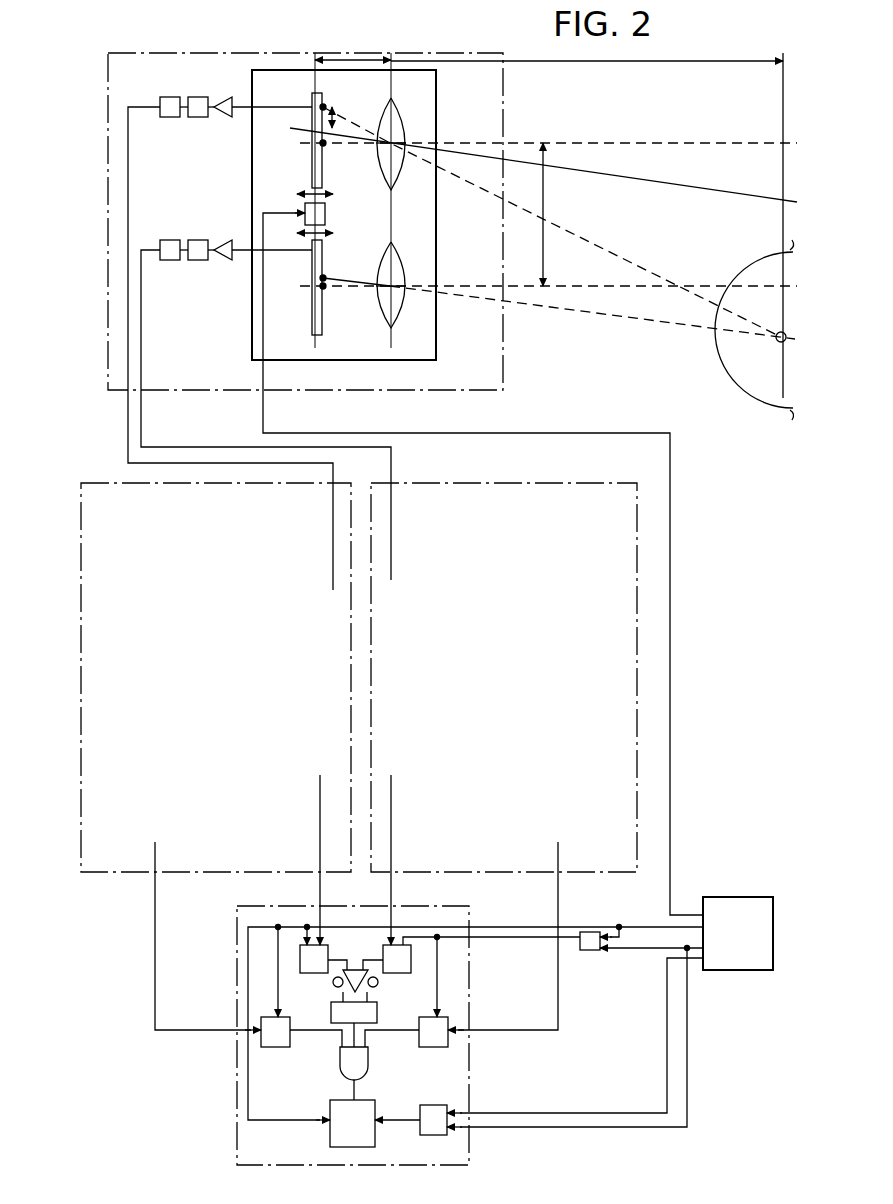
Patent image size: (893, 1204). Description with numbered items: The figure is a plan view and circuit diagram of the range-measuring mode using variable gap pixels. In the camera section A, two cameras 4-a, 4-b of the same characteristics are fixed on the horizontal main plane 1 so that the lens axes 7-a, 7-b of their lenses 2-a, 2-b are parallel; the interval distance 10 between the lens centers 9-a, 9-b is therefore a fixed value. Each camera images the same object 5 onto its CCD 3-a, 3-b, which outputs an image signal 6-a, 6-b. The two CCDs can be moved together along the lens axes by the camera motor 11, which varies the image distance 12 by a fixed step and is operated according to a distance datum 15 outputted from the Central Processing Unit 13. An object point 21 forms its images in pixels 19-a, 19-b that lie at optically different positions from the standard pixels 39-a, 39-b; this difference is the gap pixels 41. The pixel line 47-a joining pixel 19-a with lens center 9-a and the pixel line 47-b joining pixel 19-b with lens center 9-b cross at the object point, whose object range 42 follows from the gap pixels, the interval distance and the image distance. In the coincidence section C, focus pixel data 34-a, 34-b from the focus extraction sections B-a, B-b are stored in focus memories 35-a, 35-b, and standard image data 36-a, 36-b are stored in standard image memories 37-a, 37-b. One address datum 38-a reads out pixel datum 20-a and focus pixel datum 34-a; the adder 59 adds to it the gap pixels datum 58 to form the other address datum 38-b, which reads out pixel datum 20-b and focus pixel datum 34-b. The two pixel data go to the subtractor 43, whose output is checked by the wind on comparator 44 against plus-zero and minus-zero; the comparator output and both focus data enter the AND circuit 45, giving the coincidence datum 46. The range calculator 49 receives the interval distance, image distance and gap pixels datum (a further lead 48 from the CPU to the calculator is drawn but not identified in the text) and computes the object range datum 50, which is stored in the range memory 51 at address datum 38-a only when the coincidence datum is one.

The main plane 1 is at (436, 84).
The lens 2-a is at (400, 118).
The lens 2-b is at (400, 315).
The CCD 3-a is at (312, 100).
The CCD 3-b is at (312, 320).
The camera 4-a is at (365, 122).
The camera 4-b is at (345, 304).
The object 5 is at (758, 392).
The image signal 6-a is at (128, 417).
The image signal 6-b is at (141, 413).
The lens axis 7-a is at (595, 142).
The lens axis 7-b is at (547, 285).
The center of the lens 9-a is at (400, 143).
The center of the lens 9-b is at (400, 300).
The interval distance 10 is at (544, 196).
The camera motor 11 is at (302, 208).
The image distance 12 is at (356, 59).
The Central Processing Unit 13 is at (738, 933).
The distance datum 15 is at (262, 417).
The pixel 19-a is at (323, 107).
The pixel 19-b is at (323, 278).
The pixel datum 20-a is at (328, 960).
The pixel datum 20-b is at (411, 963).
The object point 21 is at (779, 335).
The focus pixel datum 34-a is at (154, 982).
The focus pixel datum 34-b is at (558, 1022).
The focus memory 35-a is at (262, 1047).
The focus memory 35-b is at (448, 1047).
The standard image data 36-a is at (318, 892).
The standard image data 36-b is at (392, 892).
The standard image memory 37-a is at (234, 971).
The standard image memory 37-b is at (485, 976).
The address datum 38-a is at (590, 902).
The address datum 38-b is at (471, 940).
The standard pixel 39-a is at (323, 143).
The standard pixel 39-b is at (323, 286).
The gap pixels 41 is at (330, 120).
The object range 42 is at (752, 62).
The subtractor 43 is at (358, 968).
The wind on comparator 44 is at (377, 1012).
The AND circuit 45 is at (366, 1074).
The coincidence datum 46 is at (352, 1092).
The pixel line 47-a is at (543, 177).
The pixel line 47-b is at (552, 227).
The lead wire 48 is at (620, 1112).
The range calculator 49 is at (434, 1135).
The object range datum 50 is at (398, 1120).
The range memory 51 is at (352, 1123).
The gap pixels datum 58 is at (640, 950).
The adder 59 is at (590, 952).
The camera section A is at (108, 95).
The focus extraction section B-a is at (216, 677).
The focus extraction section B-b is at (504, 677).
The coincidence section C is at (236, 1140).